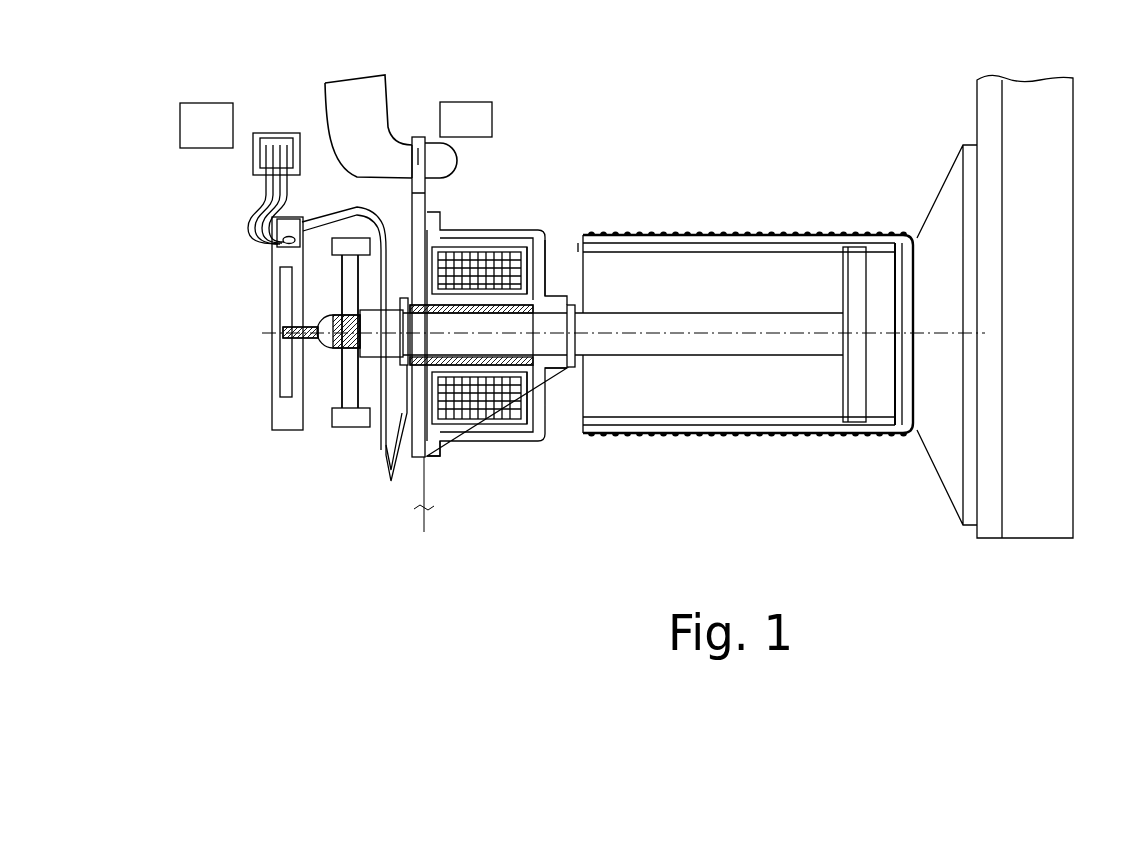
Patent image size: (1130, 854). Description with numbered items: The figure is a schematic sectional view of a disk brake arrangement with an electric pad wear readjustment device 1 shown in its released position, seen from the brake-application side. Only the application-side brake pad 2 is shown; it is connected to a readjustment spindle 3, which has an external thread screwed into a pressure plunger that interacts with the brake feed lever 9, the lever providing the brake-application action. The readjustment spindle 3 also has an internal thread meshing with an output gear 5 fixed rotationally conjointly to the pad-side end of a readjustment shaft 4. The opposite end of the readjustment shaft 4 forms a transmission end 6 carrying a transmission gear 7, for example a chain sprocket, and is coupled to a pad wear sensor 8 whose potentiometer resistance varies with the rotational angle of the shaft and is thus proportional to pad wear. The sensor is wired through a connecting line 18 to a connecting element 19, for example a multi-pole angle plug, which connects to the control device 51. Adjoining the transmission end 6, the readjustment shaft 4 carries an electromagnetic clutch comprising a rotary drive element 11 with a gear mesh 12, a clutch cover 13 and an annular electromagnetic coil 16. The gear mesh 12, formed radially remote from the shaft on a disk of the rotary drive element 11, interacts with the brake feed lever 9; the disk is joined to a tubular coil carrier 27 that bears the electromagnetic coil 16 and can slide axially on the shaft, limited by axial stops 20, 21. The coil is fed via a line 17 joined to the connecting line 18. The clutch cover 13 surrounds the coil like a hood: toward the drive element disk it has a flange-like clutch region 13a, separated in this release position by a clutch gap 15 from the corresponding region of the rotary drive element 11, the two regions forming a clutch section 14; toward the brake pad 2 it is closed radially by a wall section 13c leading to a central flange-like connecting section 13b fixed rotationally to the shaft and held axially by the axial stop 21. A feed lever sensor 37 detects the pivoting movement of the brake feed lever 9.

The pad wear readjustment device 1 is at (560, 578).
The brake pad 2 is at (1017, 139).
The readjustment spindle 3 is at (655, 233).
The readjustment shaft 4 is at (695, 350).
The output gear 5 is at (850, 290).
The transmission end 6 is at (327, 342).
The transmission gear 7 is at (343, 422).
The pad wear sensor 8 is at (248, 363).
The brake feed lever 9 is at (352, 107).
The rotary drive element 11 is at (417, 263).
The gear mesh 12 is at (417, 135).
The clutch cover 13 is at (490, 442).
The clutch region 13a is at (441, 452).
The connecting section 13b is at (563, 372).
The wall section 13c is at (541, 272).
The clutch section 14 is at (428, 207).
The clutch gap 15 is at (417, 507).
The electromagnetic coil 16 is at (497, 262).
The line 17 is at (382, 460).
The connecting line 18 is at (245, 207).
The connecting element 19 is at (262, 133).
The axial stop 20 is at (397, 326).
The axial stop 21 is at (575, 326).
The coil carrier 27 is at (507, 302).
The feed lever sensor 37 is at (475, 108).
The control device 51 is at (203, 108).